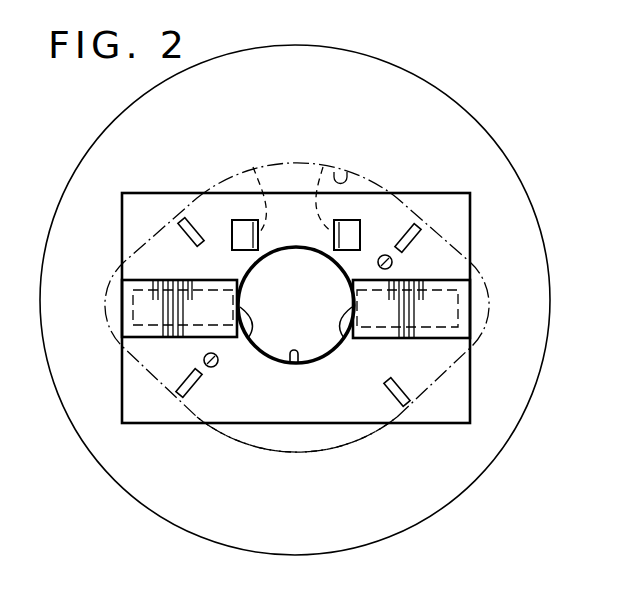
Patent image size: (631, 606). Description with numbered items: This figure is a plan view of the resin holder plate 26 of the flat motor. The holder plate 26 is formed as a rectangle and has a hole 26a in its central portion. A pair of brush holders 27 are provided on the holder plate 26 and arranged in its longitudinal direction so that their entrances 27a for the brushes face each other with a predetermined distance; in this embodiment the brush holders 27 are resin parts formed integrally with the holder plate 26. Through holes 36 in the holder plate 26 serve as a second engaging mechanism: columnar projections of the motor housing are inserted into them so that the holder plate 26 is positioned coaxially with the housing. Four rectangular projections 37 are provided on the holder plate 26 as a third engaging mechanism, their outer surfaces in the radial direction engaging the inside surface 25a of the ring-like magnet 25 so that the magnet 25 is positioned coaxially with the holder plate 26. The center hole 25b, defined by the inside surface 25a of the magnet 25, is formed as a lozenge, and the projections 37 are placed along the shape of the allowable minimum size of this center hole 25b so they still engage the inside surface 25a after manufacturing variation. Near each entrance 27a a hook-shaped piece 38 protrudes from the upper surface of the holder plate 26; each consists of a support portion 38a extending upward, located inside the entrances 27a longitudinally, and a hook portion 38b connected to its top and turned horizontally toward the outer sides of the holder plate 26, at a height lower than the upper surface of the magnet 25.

The magnet 25 is at (467, 116).
The inside surface of magnet 25a is at (341, 177).
The center hole of magnet 25b is at (311, 452).
The holder plate 26 is at (354, 408).
The hole 26a is at (290, 365).
The brush holder 27 is at (127, 293).
The entrance 27a is at (248, 338).
The through hole 36 is at (393, 262).
The rectangular projection 37 is at (184, 224).
The hook-shaped piece 38 is at (222, 231).
The support portion 38a is at (291, 187).
The hook portion 38b is at (240, 226).